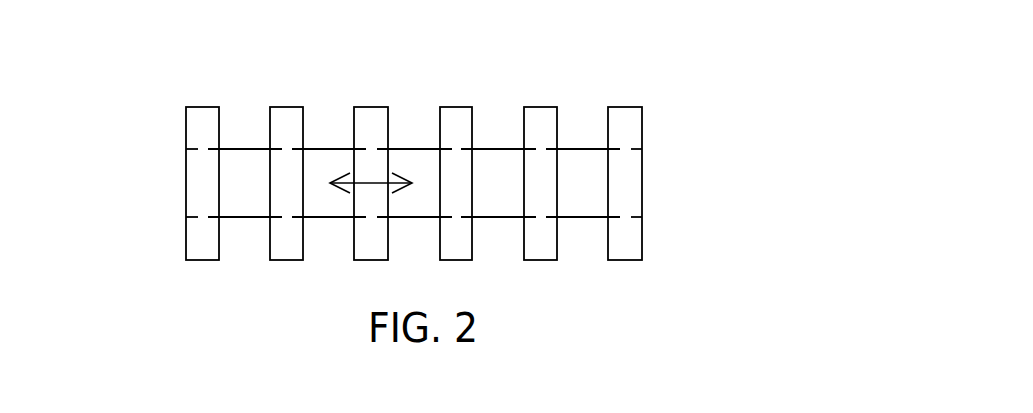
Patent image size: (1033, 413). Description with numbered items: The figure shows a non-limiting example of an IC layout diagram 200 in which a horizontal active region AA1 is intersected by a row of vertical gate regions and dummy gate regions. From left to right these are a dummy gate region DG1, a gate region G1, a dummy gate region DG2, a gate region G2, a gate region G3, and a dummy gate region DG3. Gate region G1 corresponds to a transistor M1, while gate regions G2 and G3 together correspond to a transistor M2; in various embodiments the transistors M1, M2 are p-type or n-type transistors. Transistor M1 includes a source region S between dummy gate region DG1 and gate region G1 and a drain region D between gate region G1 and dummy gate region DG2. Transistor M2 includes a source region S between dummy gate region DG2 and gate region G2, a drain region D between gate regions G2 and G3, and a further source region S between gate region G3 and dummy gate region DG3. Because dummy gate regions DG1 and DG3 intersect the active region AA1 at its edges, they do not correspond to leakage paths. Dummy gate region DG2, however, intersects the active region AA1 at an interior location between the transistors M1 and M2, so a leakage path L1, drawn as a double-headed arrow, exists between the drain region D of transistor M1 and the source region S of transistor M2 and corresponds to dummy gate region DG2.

The IC layout diagram 200 is at (738, 25).
The active region AA1 is at (170, 183).
The dummy gate region DG1 is at (205, 165).
The dummy gate region DG2 is at (375, 165).
The dummy gate region DG3 is at (624, 165).
The transistor M1 is at (289, 142).
The transistor M2 is at (497, 142).
The gate region G1 is at (286, 165).
The gate region G2 is at (454, 165).
The gate region G3 is at (540, 165).
The source region S is at (413, 183).
The drain region D is at (407, 183).
The leakage path L1 is at (371, 172).